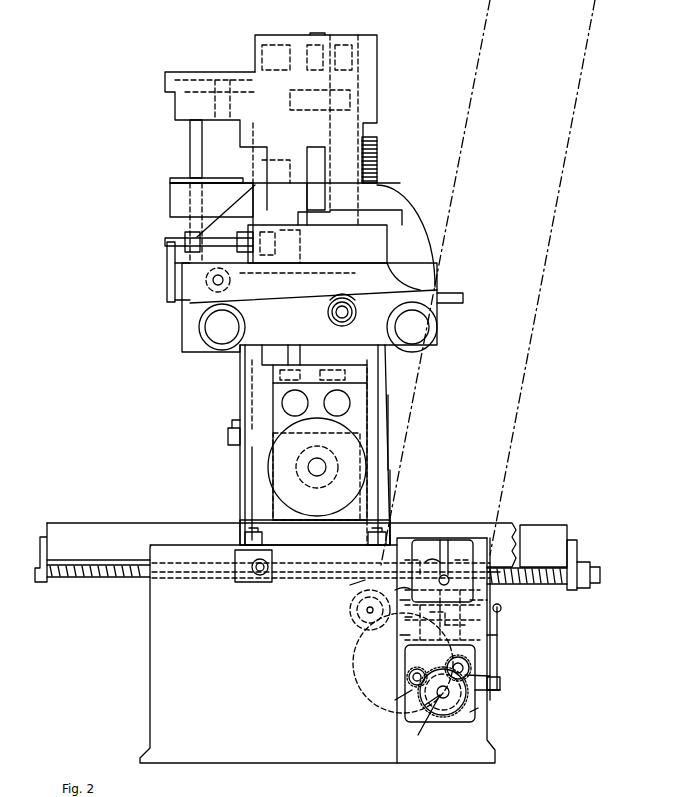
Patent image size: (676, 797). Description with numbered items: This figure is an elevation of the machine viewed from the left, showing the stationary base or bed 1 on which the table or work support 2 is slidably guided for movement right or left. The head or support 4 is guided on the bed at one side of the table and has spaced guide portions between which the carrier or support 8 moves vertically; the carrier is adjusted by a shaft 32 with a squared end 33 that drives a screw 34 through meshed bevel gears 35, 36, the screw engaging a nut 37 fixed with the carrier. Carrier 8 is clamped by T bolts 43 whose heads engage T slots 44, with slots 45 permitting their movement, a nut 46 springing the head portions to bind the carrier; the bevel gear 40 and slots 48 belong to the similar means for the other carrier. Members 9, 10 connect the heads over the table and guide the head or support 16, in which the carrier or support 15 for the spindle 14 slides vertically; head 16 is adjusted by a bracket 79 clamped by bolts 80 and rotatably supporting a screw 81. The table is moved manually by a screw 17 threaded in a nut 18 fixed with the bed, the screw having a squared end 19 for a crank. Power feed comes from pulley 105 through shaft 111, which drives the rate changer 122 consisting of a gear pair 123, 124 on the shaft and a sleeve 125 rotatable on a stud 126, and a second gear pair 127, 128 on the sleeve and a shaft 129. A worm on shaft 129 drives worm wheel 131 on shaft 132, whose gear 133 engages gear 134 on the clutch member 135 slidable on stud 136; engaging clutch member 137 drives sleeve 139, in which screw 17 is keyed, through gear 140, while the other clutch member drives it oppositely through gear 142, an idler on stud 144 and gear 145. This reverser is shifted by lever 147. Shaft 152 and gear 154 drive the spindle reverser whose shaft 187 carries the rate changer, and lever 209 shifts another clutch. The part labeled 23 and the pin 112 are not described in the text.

The stationary base or bed 1 is at (380, 765).
The table or work support 2 is at (145, 530).
The head or support 4 is at (392, 485).
The carrier or support 8 is at (372, 420).
The supporting and bracing member 9 is at (414, 340).
The supporting and bracing member 10 is at (218, 342).
The spindle 14 is at (476, 552).
The carrier or support 15 is at (273, 157).
The head or support 16 is at (413, 242).
The screw 17 is at (548, 584).
The nut 18 is at (350, 586).
The squared end 19 is at (600, 575).
The clamp bolt 23 is at (258, 577).
The shaft 32 is at (243, 238).
The squared end 33 is at (170, 243).
The screw 34 is at (270, 345).
The bevel gear 35 is at (296, 214).
The bevel gear 36 is at (282, 250).
The nut 37 is at (282, 388).
The bevel gear 40 is at (240, 477).
The T bolt 43 is at (228, 440).
The T slot 44 is at (372, 400).
The slot 45 is at (245, 458).
The nut 46 is at (228, 432).
The slot 48 is at (386, 458).
The bracket 79 is at (298, 328).
The bolt 80 is at (190, 305).
The screw 81 is at (341, 300).
The pulley 105 is at (368, 700).
The shaft 111 is at (392, 698).
The pin 112 is at (500, 612).
The rate changer 122 is at (500, 692).
The gear 123 is at (408, 680).
The gear 124 is at (444, 716).
The sleeve 125 is at (423, 705).
The stud 126 is at (423, 722).
The gear 127 is at (484, 713).
The gear 128 is at (470, 660).
The shaft 129 is at (494, 675).
The worm wheel 131 is at (465, 627).
The shaft 132 is at (472, 638).
The gear 133 is at (431, 623).
The gear 134 is at (397, 588).
The clutch member 135 is at (405, 635).
The stud 136 is at (475, 600).
The clutch member 137 is at (490, 580).
The sleeve 139 is at (427, 554).
The gear 140 is at (450, 581).
The gear 142 is at (420, 615).
The stud 144 is at (395, 603).
The gear 145 is at (408, 560).
The lever 147 is at (445, 540).
The shaft 152 is at (358, 618).
The gear 154 is at (460, 553).
The shaft 187 is at (370, 537).
The lever 209 is at (170, 280).